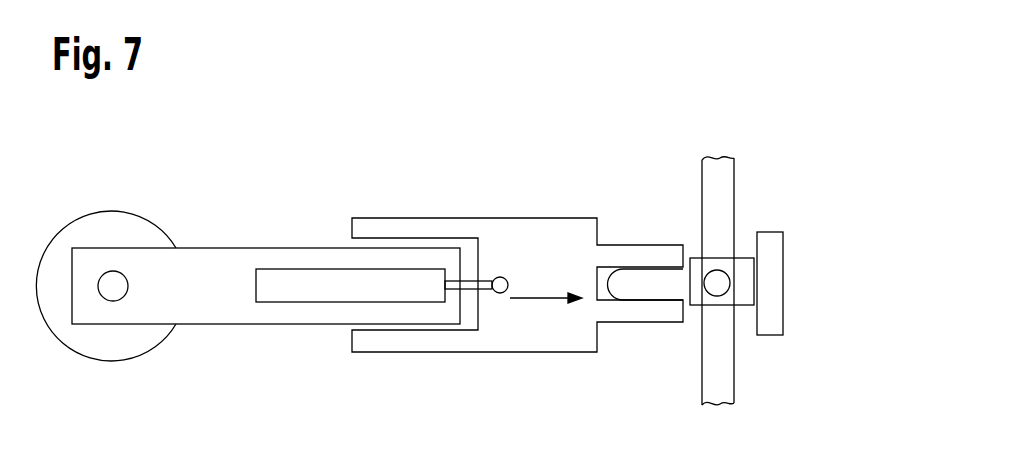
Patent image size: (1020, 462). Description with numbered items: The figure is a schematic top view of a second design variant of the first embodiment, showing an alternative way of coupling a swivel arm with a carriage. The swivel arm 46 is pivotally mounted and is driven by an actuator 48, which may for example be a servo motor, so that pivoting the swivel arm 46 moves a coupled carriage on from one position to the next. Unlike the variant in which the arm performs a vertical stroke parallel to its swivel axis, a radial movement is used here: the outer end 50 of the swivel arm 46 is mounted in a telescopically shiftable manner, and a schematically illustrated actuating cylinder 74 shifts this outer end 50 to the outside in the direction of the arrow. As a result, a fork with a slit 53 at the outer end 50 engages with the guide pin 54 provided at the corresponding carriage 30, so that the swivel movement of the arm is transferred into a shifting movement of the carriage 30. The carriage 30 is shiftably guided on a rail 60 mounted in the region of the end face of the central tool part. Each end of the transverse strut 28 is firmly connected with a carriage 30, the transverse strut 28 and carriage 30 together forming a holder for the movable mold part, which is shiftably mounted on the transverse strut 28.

The transverse strut 28 is at (773, 280).
The carriage 30 is at (738, 272).
The swivel arm 46 is at (225, 257).
The actuator 48 is at (132, 342).
The outer end 50 is at (628, 358).
The slit 53 is at (631, 280).
The guide pin 54 is at (715, 282).
The rail 60 is at (720, 382).
The actuating cylinder 74 is at (302, 330).